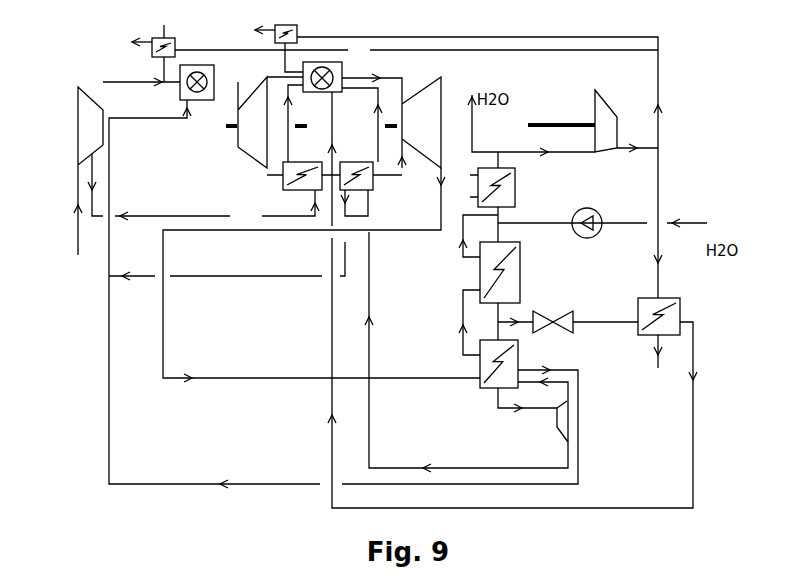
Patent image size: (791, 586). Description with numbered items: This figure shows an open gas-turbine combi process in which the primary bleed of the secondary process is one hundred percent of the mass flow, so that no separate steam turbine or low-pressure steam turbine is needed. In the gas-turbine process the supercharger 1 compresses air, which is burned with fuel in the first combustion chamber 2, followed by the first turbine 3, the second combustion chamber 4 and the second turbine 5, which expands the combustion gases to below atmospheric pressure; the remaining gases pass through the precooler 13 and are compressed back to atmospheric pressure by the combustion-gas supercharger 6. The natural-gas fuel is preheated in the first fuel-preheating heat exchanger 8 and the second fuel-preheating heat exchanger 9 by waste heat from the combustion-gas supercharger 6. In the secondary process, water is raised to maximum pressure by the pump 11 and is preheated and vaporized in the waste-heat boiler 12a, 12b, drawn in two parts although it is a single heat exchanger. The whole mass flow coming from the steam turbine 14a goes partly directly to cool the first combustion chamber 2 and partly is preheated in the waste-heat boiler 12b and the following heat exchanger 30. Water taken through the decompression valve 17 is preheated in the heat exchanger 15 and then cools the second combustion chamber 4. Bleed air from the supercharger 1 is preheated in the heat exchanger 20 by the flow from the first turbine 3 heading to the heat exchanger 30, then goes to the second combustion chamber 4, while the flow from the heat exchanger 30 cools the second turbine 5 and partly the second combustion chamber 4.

The supercharger 1 is at (78, 115).
The first combustion chamber 2 is at (212, 102).
The first turbine 3 is at (240, 152).
The second combustion chamber 4 is at (332, 95).
The second turbine 5 is at (446, 110).
The combustion-gas supercharger 6 is at (604, 105).
The first fuel-preheating heat exchanger 8 is at (150, 52).
The second fuel-preheating heat exchanger 9 is at (297, 40).
The pump 11 is at (600, 212).
The waste-heat boiler 12a is at (478, 257).
The waste-heat boiler 12b is at (477, 374).
The precooler 13 is at (515, 170).
The high-pressure turbine 14a is at (556, 434).
The heat exchanger 15 is at (680, 304).
The decompression valve 17 is at (573, 311).
The heat exchanger 20 is at (282, 189).
The heat exchanger 30 is at (368, 188).